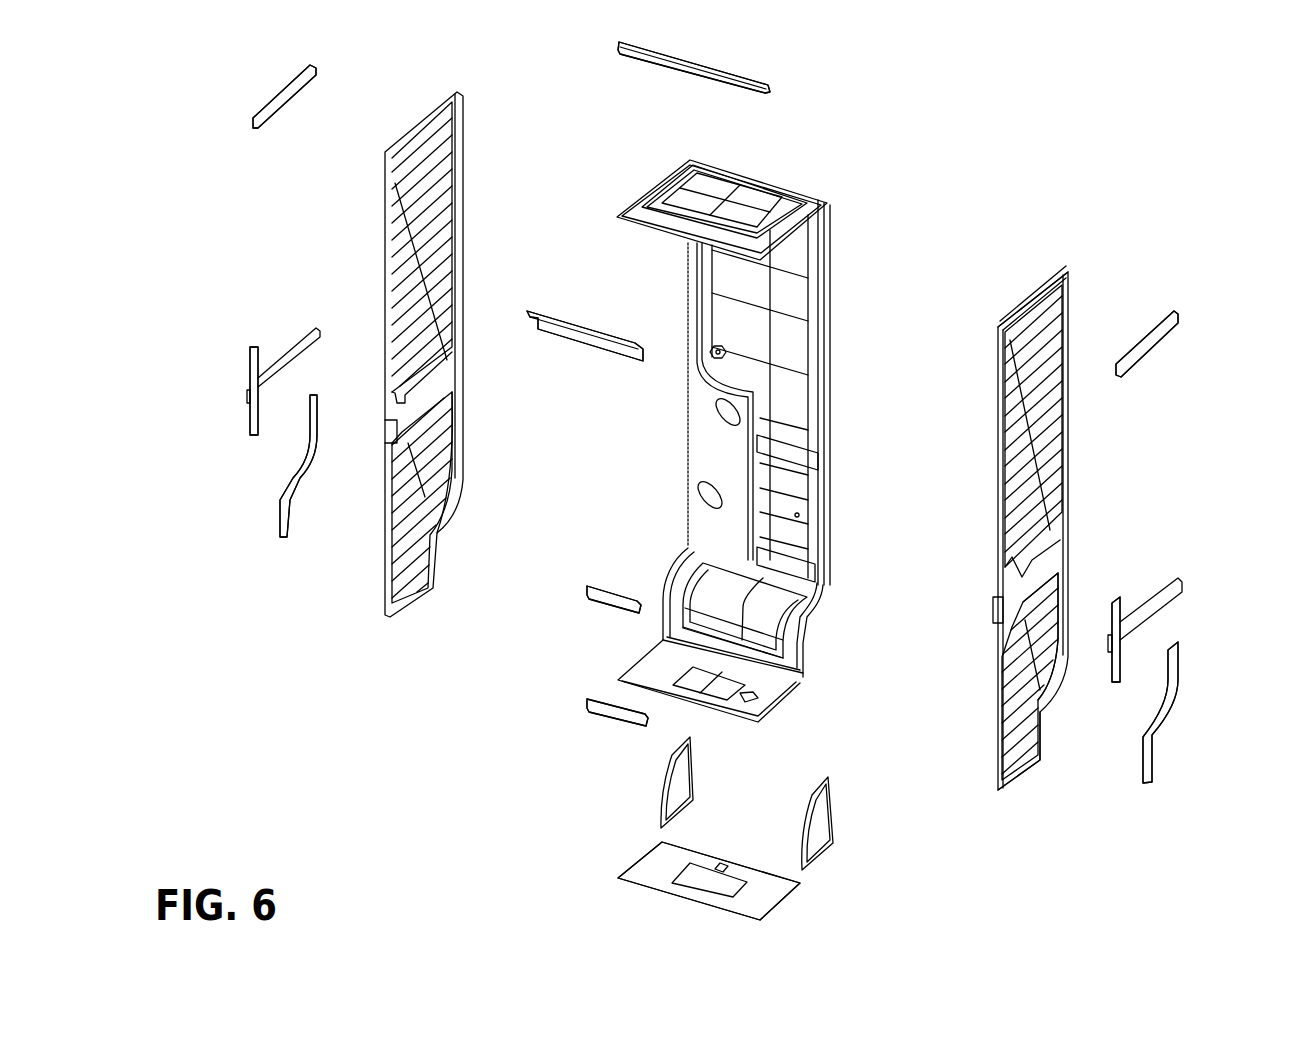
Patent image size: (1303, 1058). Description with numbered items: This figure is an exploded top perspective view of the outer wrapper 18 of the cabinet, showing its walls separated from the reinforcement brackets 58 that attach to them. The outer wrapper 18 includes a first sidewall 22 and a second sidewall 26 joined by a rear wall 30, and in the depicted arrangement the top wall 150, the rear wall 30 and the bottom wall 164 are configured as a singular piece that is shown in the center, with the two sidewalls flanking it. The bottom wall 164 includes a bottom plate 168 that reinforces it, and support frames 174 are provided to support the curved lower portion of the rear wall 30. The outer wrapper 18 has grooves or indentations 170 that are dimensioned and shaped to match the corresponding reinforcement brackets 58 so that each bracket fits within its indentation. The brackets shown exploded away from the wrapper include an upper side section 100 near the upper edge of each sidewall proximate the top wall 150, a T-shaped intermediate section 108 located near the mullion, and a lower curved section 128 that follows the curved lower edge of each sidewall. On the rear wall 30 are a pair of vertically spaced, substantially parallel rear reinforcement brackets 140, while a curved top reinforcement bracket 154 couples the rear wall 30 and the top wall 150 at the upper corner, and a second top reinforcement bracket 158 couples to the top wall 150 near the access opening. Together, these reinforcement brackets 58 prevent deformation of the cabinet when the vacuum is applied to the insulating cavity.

The outer wrapper 18 is at (1128, 190).
The first sidewall 22 is at (440, 176).
The second sidewall 26 is at (1043, 443).
The rear wall 30 is at (832, 343).
The reinforcement brackets 58 is at (258, 96).
The upper side section 100 is at (288, 88).
The intermediate section 108 is at (280, 368).
The lower curved section 128 is at (285, 483).
The rear reinforcement brackets 140 is at (615, 598).
The top wall 150 is at (727, 188).
The top reinforcement bracket 154 is at (722, 76).
The second top reinforcement bracket 158 is at (612, 345).
The bottom wall 164 is at (766, 690).
The bottom plate 168 is at (748, 908).
The indentations 170 is at (632, 213).
The support frames 174 is at (668, 772).